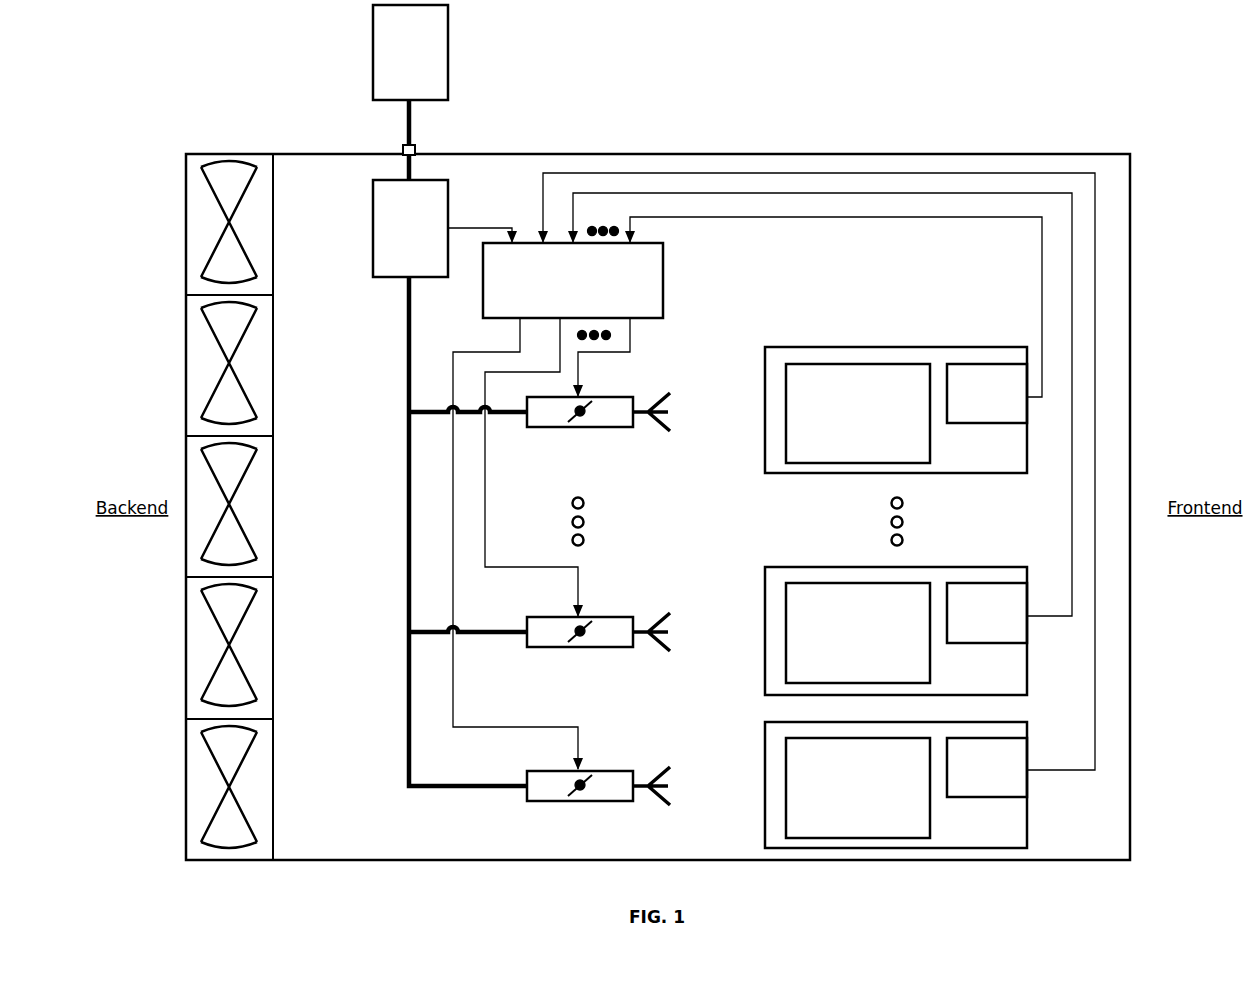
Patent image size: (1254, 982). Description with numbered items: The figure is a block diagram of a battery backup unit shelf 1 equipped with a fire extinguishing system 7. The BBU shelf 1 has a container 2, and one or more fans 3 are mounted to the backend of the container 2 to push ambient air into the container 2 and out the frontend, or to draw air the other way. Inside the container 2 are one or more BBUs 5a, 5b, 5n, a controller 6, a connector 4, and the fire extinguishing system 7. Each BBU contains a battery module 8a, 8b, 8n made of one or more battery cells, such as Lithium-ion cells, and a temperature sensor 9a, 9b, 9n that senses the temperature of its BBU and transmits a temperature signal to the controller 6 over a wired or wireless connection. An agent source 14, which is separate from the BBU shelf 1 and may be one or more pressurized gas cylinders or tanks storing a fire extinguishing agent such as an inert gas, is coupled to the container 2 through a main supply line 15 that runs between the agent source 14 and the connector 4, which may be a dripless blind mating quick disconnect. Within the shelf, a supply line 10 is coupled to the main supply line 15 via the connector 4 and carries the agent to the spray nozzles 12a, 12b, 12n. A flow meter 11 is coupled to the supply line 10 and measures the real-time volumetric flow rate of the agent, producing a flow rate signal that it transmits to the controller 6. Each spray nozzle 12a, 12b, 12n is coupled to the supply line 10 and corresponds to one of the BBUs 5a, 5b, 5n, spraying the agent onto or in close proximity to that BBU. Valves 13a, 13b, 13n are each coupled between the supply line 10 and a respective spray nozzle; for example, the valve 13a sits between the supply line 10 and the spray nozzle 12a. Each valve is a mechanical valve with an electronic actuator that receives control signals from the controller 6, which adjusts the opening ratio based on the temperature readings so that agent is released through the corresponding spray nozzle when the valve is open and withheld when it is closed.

The BBU shelf 1 is at (166, 107).
The container 2 is at (1075, 153).
The fans 3 is at (273, 153).
The connector 4 is at (392, 145).
The BBU 5a is at (819, 510).
The BBU 5b is at (822, 444).
The BBU 5n is at (836, 345).
The controller 6 is at (558, 498).
The fire extinguishing system 7 is at (384, 744).
The battery module 8a is at (858, 788).
The battery module 8b is at (858, 633).
The battery module 8n is at (858, 413).
The temperature sensor 9a is at (819, 485).
The temperature sensor 9b is at (822, 418).
The temperature sensor 9n is at (836, 320).
The supply line 10 is at (408, 553).
The flow meter 11 is at (442, 228).
The spray nozzle 12a is at (674, 748).
The spray nozzle 12b is at (677, 594).
The spray nozzle 12n is at (674, 384).
The valve 13a is at (601, 765).
The valve 13b is at (601, 607).
The valve 13n is at (638, 437).
The agent source 14 is at (410, 52).
The main supply line 15 is at (412, 122).